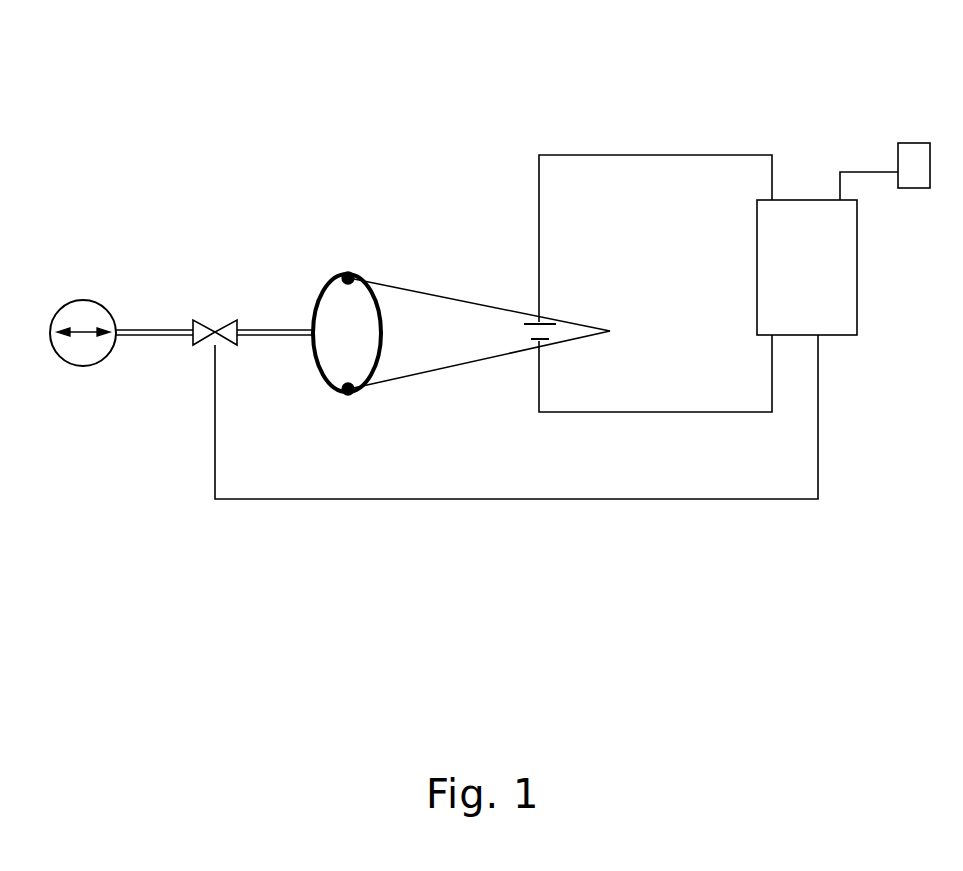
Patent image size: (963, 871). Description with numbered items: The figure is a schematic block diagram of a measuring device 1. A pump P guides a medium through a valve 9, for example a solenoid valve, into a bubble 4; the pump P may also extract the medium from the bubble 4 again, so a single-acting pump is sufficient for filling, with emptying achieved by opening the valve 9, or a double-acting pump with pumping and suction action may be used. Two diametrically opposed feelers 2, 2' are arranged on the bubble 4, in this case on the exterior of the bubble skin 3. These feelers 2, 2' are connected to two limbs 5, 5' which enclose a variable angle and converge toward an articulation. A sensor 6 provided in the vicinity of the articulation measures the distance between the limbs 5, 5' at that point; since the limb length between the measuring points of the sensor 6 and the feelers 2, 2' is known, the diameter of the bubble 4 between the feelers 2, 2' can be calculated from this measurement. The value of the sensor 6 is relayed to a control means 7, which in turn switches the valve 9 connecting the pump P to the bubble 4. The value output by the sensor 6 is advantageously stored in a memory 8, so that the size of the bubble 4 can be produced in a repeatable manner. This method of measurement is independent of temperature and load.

The measuring device 1 is at (418, 118).
The pump P is at (84, 300).
The feeler 2 is at (335, 237).
The feeler 2' is at (330, 428).
The bubble skin 3 is at (314, 302).
The bubble 4 is at (337, 347).
The limb 5 is at (479, 278).
The limb 5' is at (479, 392).
The sensor 6 is at (547, 332).
The control means 7 is at (858, 277).
The memory 8 is at (912, 142).
The valve 9 is at (200, 347).